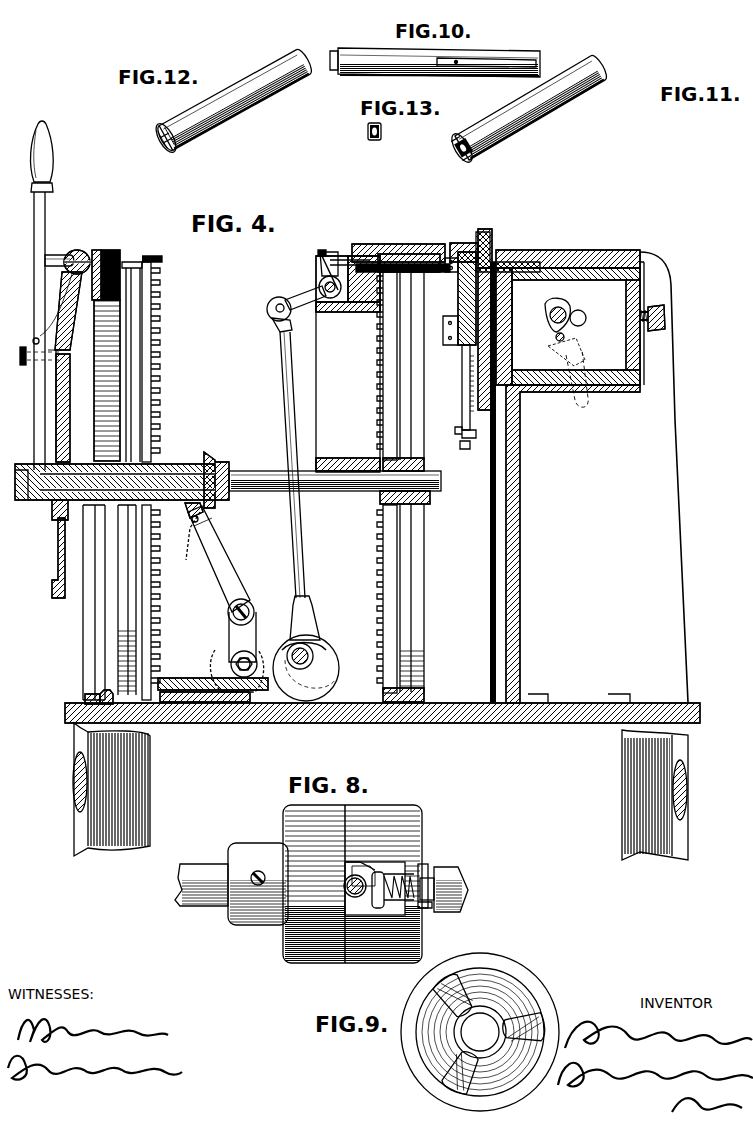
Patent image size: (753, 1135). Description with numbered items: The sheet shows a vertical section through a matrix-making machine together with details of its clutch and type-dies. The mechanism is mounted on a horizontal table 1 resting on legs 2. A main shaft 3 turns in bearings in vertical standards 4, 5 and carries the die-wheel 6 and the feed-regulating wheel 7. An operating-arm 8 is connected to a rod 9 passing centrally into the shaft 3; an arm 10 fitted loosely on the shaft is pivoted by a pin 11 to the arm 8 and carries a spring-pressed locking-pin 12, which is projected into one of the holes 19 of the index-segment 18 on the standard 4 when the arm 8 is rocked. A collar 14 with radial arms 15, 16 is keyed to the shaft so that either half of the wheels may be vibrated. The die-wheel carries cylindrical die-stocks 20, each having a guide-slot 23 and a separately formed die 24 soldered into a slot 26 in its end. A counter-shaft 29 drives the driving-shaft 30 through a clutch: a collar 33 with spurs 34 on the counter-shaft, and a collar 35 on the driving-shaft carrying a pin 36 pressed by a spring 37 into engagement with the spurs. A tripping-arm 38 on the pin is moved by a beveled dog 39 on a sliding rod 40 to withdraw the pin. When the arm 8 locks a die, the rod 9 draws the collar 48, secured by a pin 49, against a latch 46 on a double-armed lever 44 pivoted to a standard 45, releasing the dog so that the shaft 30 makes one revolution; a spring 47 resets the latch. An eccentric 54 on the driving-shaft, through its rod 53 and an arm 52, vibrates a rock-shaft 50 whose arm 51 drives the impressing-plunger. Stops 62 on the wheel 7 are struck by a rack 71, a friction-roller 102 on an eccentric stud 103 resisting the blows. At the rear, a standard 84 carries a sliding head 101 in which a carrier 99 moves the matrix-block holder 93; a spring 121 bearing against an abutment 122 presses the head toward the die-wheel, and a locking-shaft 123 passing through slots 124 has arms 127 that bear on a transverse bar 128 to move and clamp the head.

In FIG. 4, the horizontal frame or table 1 is at (382, 726).
In FIG. 4, the legs 2 is at (390, 791).
In FIG. 4, the main shaft 3 is at (335, 490).
In FIG. 4, the vertical standard 4 is at (109, 602).
In FIG. 4, the vertical standard 5 is at (348, 364).
In FIG. 4, the type or die carrying wheel 6 is at (430, 504).
In FIG. 4, the feed-regulating wheel 7 is at (118, 362).
In FIG. 4, the operating arm or lever 8 is at (35, 295).
In FIG. 4, the rod or stem 9 is at (176, 468).
In FIG. 4, the arm 10 is at (52, 396).
In FIG. 4, the pin 11 is at (24, 347).
In FIG. 4, the locking-pin 12 is at (60, 255).
In FIG. 4, the hub or collar 14 is at (70, 510).
In FIG. 4, the arm 15 is at (66, 428).
In FIG. 4, the arm 16 is at (50, 558).
In FIG. 4, the index-segment 18 is at (109, 268).
In FIG. 4, the holes 19 is at (90, 257).
In FIG. 12, the die-stocks 20 is at (235, 99).
In FIG. 10, the die-stocks 20 is at (435, 62).
In FIG. 11, the die-stocks 20 is at (529, 108).
In FIG. 4, the die-stocks 20 is at (383, 360).
In FIG. 10, the longitudinal guide-slot 23 is at (500, 63).
In FIG. 13, the type or character die 24 is at (366, 141).
In FIG. 11, the type or character die 24 is at (458, 147).
In FIG. 12, the slots 26 is at (157, 137).
In FIG. 8, the counter-shaft 29 is at (201, 897).
In FIG. 4, the driving-shaft 30 is at (311, 668).
In FIG. 8, the driving-shaft 30 is at (463, 889).
In FIG. 8, the collar 33 is at (258, 884).
In FIG. 9, the collar 33 is at (480, 1032).
In FIG. 9, the spurs or drivers 34 is at (425, 1002).
In FIG. 8, the collar 35 is at (352, 884).
In FIG. 8, the pin 36 is at (428, 908).
In FIG. 8, the spring 37 is at (428, 864).
In FIG. 8, the tripping-arm 38 is at (378, 870).
In FIG. 8, the dog or pawl 39 is at (352, 868).
In FIG. 8, the horizontal rod or bar 40 is at (345, 889).
In FIG. 4, the double-armed lever 44 is at (222, 591).
In FIG. 4, the vertical standard 45 is at (220, 656).
In FIG. 4, the latch 46 is at (187, 503).
In FIG. 4, the spring 47 is at (192, 545).
In FIG. 4, the collar 48 is at (216, 472).
In FIG. 4, the pin 49 is at (207, 505).
In FIG. 4, the rock-shaft 50 is at (334, 291).
In FIG. 4, the arm 51 is at (322, 268).
In FIG. 4, the arm 52 is at (296, 309).
In FIG. 4, the rod 53 is at (283, 465).
In FIG. 4, the eccentric or crank 54 is at (306, 656).
In FIG. 4, the stops or projections 62 is at (162, 358).
In FIG. 4, the rack 71 is at (213, 682).
In FIG. 4, the vertical frame or standard 84 is at (582, 467).
In FIG. 4, the matrix-block holder 93 is at (462, 342).
In FIG. 4, the carrier 99 is at (494, 242).
In FIG. 4, the sliding head or frame 101 is at (578, 318).
In FIG. 4, the friction-roller 102 is at (84, 698).
In FIG. 4, the stud 103 is at (106, 690).
In FIG. 4, the spring 121 is at (646, 311).
In FIG. 4, the abutment 122 is at (659, 326).
In FIG. 4, the locking-shaft 123 is at (548, 308).
In FIG. 4, the horizontal slots 124 is at (589, 312).
In FIG. 4, the arms 127 is at (555, 336).
In FIG. 4, the transverse rod or bar 128 is at (564, 340).